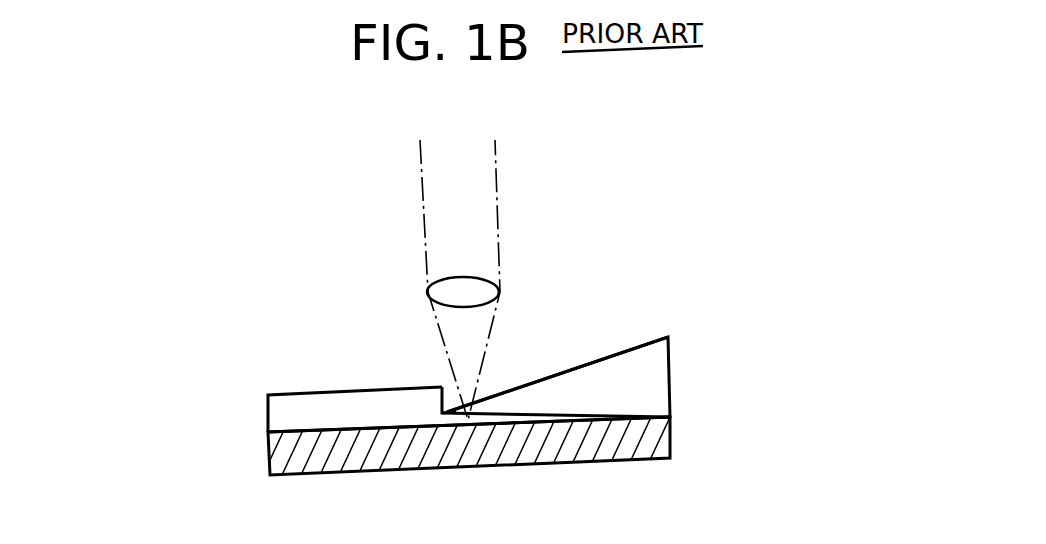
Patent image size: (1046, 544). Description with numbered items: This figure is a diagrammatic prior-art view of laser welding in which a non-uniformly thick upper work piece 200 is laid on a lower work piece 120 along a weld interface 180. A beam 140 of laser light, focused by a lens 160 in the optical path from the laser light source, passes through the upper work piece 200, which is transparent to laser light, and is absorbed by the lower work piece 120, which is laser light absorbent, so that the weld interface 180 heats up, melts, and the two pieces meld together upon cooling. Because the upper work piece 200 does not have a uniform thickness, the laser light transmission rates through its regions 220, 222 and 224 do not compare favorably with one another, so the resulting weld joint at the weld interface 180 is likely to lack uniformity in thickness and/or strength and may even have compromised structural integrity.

The lower work piece 120 is at (670, 438).
The beam 140 is at (490, 348).
The lens 160 is at (502, 292).
The weld interface 180 is at (268, 436).
The upper work piece 200 is at (670, 372).
The region 220 is at (642, 340).
The region 222 is at (325, 392).
The region 224 is at (452, 407).